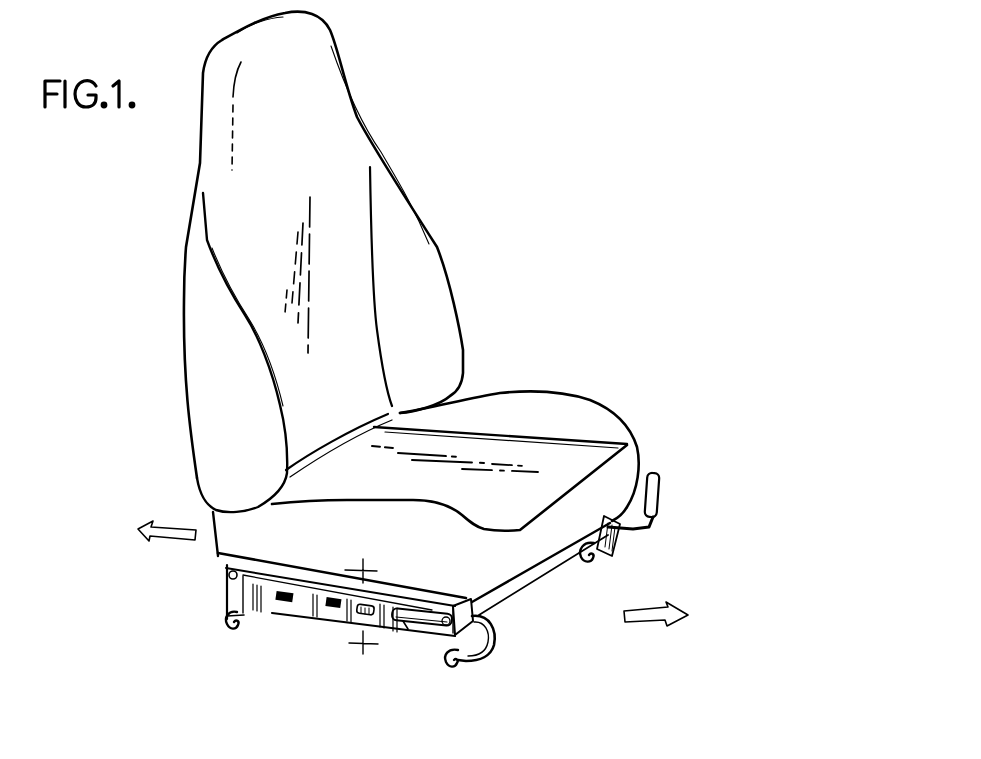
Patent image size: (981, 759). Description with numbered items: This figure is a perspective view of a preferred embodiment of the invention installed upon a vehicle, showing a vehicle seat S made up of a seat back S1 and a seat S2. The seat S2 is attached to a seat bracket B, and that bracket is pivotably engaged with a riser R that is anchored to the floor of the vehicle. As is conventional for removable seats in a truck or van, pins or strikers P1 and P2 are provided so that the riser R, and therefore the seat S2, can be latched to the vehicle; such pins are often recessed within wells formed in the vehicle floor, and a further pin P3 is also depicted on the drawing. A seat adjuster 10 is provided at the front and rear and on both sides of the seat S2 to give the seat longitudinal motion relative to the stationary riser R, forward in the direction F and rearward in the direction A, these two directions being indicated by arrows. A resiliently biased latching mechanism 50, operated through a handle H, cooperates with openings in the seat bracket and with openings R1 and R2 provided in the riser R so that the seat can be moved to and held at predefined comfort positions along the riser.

The vehicle seat S is at (436, 162).
The seat back S1 is at (440, 240).
The seat S2 is at (562, 393).
The handle H is at (661, 473).
The pin P1 is at (458, 666).
The pin P2 is at (228, 626).
The third pivot point P3 is at (597, 562).
The riser R is at (302, 610).
The opening R1 is at (277, 604).
The opening R2 is at (328, 608).
The seat adjuster 10 is at (410, 638).
The resiliently biased latching mechanism 50 is at (357, 620).
The seat bracket B is at (485, 614).
The aft direction A is at (191, 541).
The fore direction F is at (628, 611).